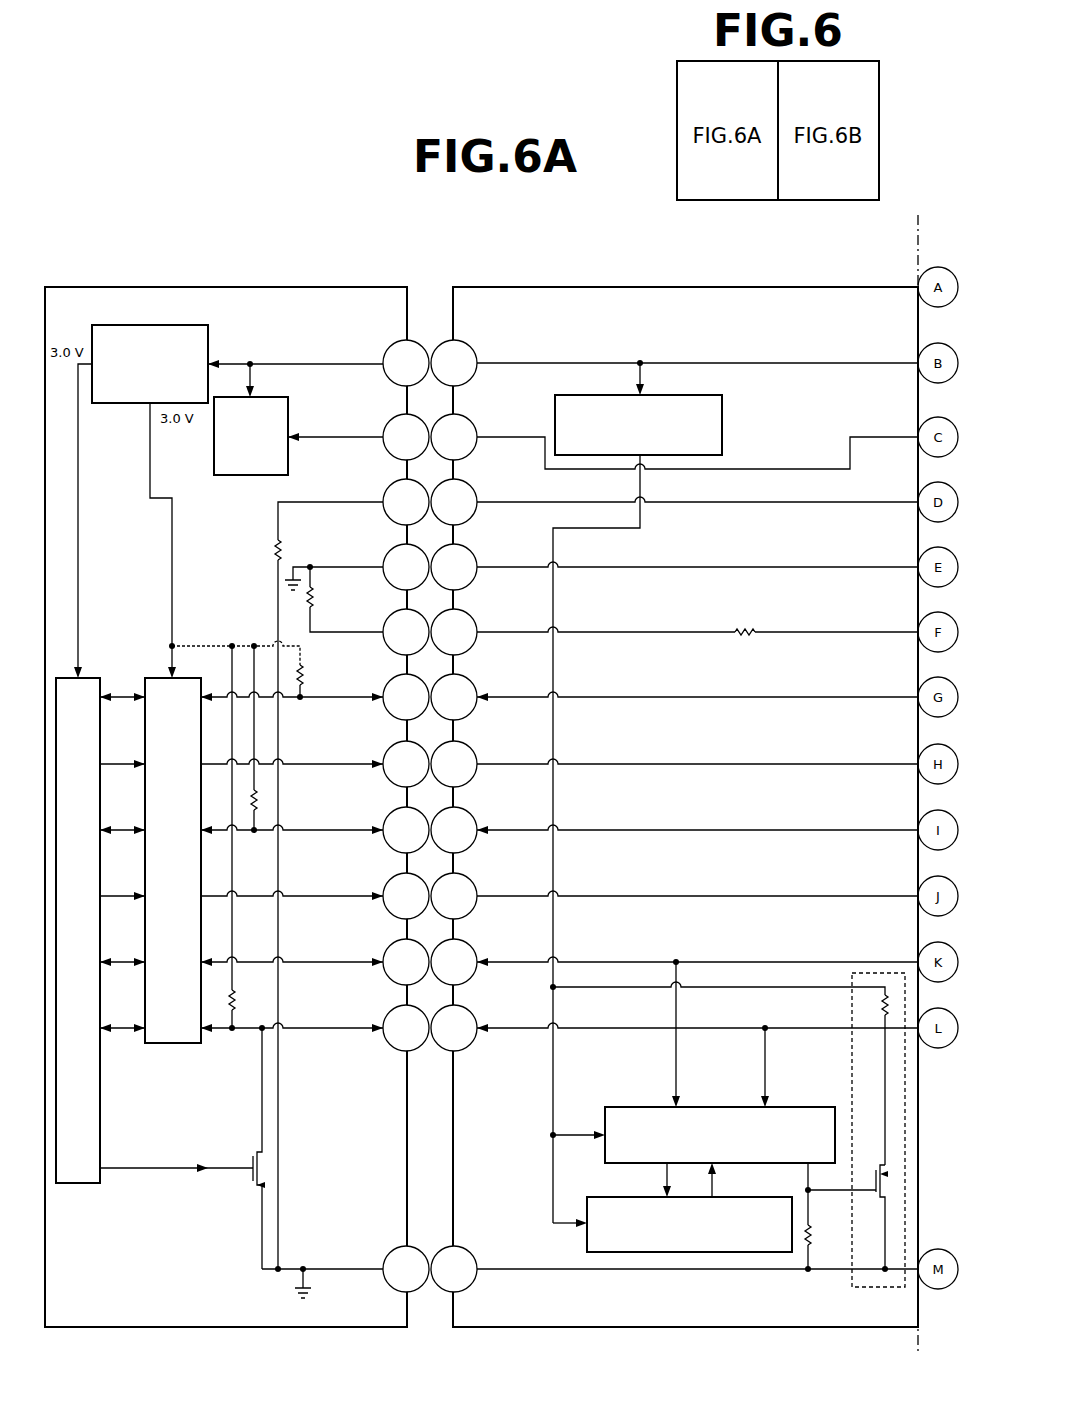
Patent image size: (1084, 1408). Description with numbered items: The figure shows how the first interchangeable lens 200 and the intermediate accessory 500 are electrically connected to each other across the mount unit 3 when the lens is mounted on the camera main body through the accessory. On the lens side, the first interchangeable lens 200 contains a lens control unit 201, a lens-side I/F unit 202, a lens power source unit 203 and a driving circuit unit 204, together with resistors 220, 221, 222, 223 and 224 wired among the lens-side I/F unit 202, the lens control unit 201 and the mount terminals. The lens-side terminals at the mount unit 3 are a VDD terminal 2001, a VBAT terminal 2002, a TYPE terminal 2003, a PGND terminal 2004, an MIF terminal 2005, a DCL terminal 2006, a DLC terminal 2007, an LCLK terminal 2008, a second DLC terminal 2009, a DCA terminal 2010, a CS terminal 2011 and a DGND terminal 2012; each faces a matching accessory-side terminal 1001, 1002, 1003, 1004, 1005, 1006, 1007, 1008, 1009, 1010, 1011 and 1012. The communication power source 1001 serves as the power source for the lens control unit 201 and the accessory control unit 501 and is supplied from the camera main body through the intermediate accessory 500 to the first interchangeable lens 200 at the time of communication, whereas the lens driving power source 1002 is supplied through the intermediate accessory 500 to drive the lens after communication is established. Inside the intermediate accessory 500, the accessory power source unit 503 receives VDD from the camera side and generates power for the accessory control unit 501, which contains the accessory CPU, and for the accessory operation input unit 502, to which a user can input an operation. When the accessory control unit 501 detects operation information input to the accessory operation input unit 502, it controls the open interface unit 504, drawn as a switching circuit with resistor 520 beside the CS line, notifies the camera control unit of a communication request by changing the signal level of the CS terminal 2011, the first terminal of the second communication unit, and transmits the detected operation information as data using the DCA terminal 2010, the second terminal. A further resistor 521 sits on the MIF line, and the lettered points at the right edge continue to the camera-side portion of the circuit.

The mount unit 3 is at (430, 280).
The first interchangeable lens 200 is at (148, 287).
The lens control unit 201 is at (78, 1183).
The lens-side I/F unit 202 is at (172, 1043).
The lens power source unit 203 is at (208, 344).
The driving circuit unit 204 is at (245, 476).
The resistor 220 is at (258, 795).
The resistor 221 is at (314, 700).
The resistor 222 is at (236, 1012).
The resistor 223 is at (296, 596).
The resistor 224 is at (270, 550).
The intermediate accessory 500 is at (728, 287).
The accessory control unit 501 is at (637, 1107).
The accessory operation input unit 502 is at (722, 1197).
The accessory power source unit 503 is at (722, 426).
The open interface unit 504 is at (852, 1068).
The resistor 520 is at (876, 1008).
The resistor 521 is at (744, 624).
The VDD terminal 2001 is at (395, 342).
The VBAT terminal 2002 is at (385, 424).
The TYPE terminal 2003 is at (385, 490).
The PGND terminal 2004 is at (385, 556).
The MIF terminal 2005 is at (385, 622).
The DCL terminal 2006 is at (385, 687).
The DLC terminal 2007 is at (385, 753).
The LCLK terminal 2008 is at (385, 819).
The DLC2 terminal 2009 is at (385, 885).
The DCA terminal 2010 is at (385, 951).
The CS terminal 2011 is at (385, 1017).
The DGND terminal 2012 is at (395, 1248).
The communication power source 1001 is at (468, 342).
The lens driving power source 1002 is at (476, 424).
The TYPE terminal 1003 is at (476, 490).
The PGND terminal 1004 is at (476, 556).
The MIF terminal 1005 is at (476, 622).
The DCL terminal 1006 is at (476, 687).
The DLC terminal 1007 is at (476, 753).
The LCLK terminal 1008 is at (476, 819).
The DLC2 terminal 1009 is at (476, 885).
The DCA terminal 1010 is at (476, 951).
The CS terminal 1011 is at (476, 1017).
The DGND terminal 1012 is at (468, 1248).